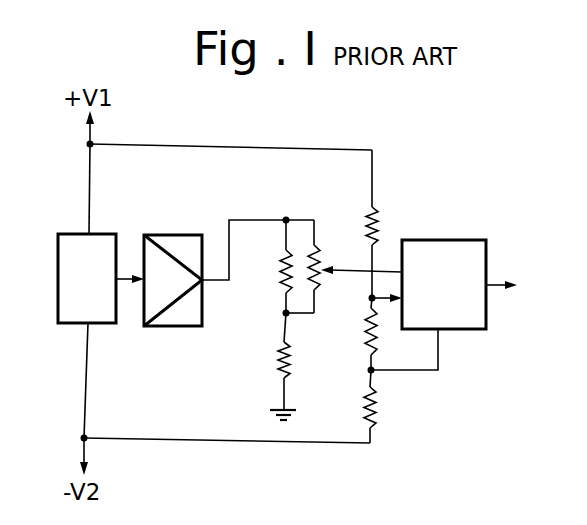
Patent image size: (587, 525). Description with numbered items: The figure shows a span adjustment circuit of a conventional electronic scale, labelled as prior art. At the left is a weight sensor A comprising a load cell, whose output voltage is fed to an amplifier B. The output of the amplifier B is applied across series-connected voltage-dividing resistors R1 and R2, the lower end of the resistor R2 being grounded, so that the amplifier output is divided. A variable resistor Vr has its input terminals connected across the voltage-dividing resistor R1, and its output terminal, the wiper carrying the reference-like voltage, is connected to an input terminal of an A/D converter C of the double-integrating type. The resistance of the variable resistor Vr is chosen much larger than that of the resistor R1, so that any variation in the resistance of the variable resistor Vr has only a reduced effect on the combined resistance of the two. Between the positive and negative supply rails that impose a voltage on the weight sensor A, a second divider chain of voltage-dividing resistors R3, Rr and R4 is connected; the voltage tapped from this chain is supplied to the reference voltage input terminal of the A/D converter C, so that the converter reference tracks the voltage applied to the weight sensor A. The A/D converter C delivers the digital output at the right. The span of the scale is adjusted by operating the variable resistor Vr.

The weight sensor A is at (87, 278).
The amplifier B is at (173, 280).
The A/D converter C is at (444, 284).
The voltage-dividing resistor R1 is at (264, 266).
The voltage-dividing resistor R2 is at (266, 366).
The voltage-dividing resistor R3 is at (388, 224).
The voltage-dividing resistor R4 is at (387, 406).
The voltage-dividing resistor Rr is at (385, 334).
The variable resistor Vr is at (355, 266).